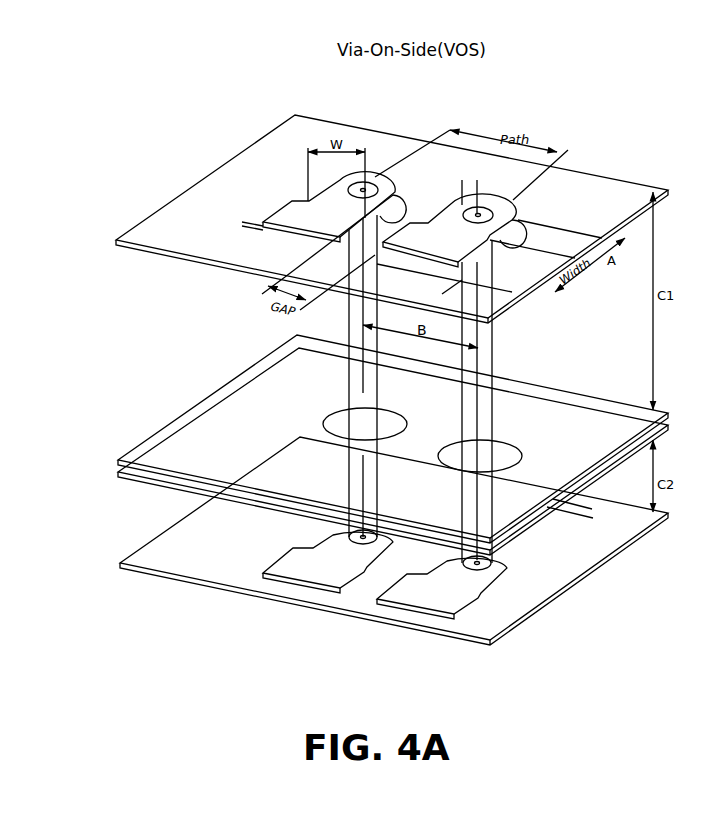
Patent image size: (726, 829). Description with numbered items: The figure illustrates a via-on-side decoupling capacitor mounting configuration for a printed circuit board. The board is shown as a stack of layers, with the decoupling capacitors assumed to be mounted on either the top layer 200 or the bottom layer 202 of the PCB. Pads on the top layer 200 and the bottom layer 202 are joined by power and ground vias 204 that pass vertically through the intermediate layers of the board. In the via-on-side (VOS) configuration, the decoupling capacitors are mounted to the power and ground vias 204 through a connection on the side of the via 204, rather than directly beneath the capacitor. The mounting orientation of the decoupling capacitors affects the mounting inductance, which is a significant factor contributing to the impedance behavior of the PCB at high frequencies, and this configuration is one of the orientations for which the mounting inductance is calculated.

The top layer 200 is at (222, 167).
The power and ground vias 204 is at (375, 177).
The bottom layer 202 is at (580, 583).